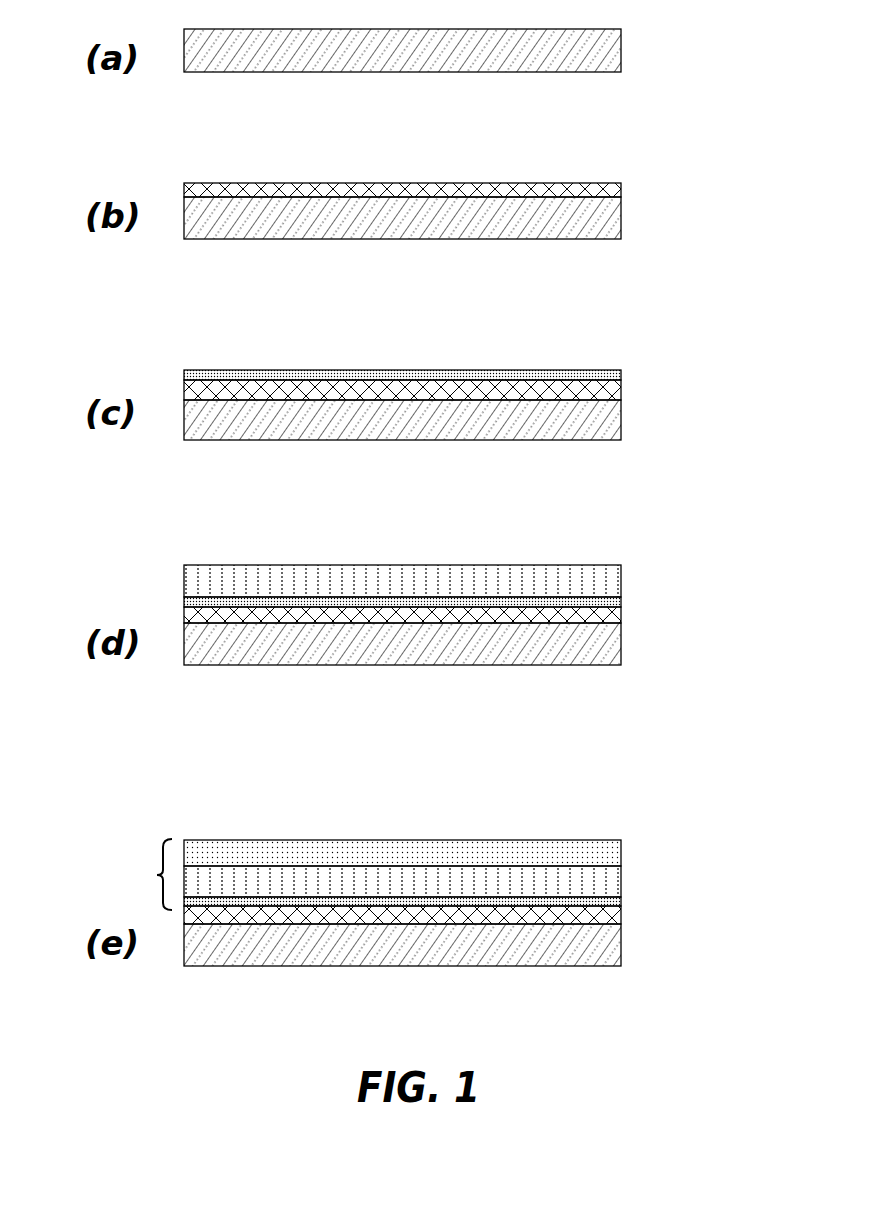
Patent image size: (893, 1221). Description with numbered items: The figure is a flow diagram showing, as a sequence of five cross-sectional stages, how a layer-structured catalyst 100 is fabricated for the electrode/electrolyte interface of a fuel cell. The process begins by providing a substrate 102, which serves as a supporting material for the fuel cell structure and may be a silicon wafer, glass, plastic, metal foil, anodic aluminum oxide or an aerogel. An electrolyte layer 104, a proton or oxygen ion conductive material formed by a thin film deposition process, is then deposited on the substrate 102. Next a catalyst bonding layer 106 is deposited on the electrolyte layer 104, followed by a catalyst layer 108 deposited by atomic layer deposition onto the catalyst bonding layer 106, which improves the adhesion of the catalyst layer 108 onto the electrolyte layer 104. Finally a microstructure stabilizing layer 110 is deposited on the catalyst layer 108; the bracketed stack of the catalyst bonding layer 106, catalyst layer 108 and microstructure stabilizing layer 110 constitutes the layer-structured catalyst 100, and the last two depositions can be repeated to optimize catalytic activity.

The layer-structured catalyst 100 is at (134, 871).
The substrate 102 is at (621, 52).
The electrolyte layer 104 is at (621, 184).
The catalyst bonding layer 106 is at (621, 372).
The catalyst layer 108 is at (621, 565).
The microstructure stabilizing layer 110 is at (618, 841).